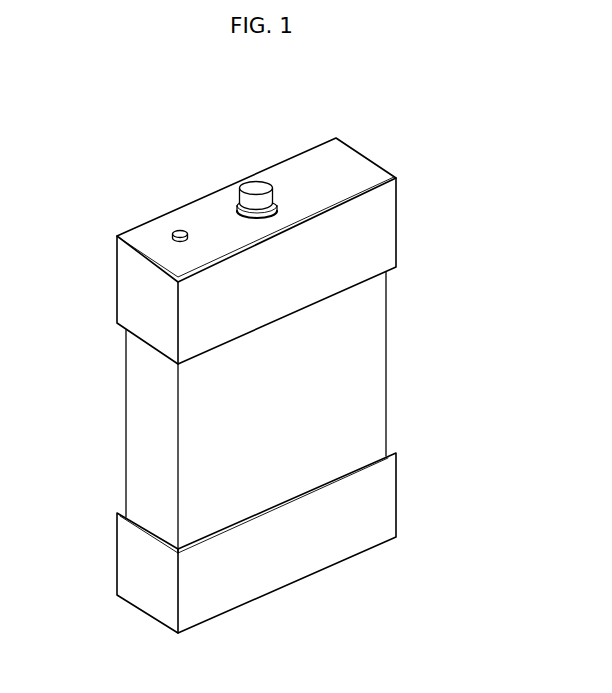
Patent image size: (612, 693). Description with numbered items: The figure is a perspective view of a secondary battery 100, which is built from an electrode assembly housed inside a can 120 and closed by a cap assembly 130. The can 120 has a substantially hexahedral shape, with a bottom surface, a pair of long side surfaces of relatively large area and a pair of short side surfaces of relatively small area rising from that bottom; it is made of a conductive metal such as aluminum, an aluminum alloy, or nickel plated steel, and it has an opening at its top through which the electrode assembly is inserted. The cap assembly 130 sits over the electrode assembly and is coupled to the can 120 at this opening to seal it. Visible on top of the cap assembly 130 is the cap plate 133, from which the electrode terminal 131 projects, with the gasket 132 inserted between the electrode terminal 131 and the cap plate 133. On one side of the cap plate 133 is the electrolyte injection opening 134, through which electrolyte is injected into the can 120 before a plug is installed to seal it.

The secondary battery 100 is at (438, 93).
The can 120 is at (395, 305).
The cap assembly 130 is at (117, 235).
The electrode terminal 131 is at (254, 187).
The gasket 132 is at (237, 200).
The cap plate 133 is at (308, 163).
The electrolyte injection opening 134 is at (178, 230).